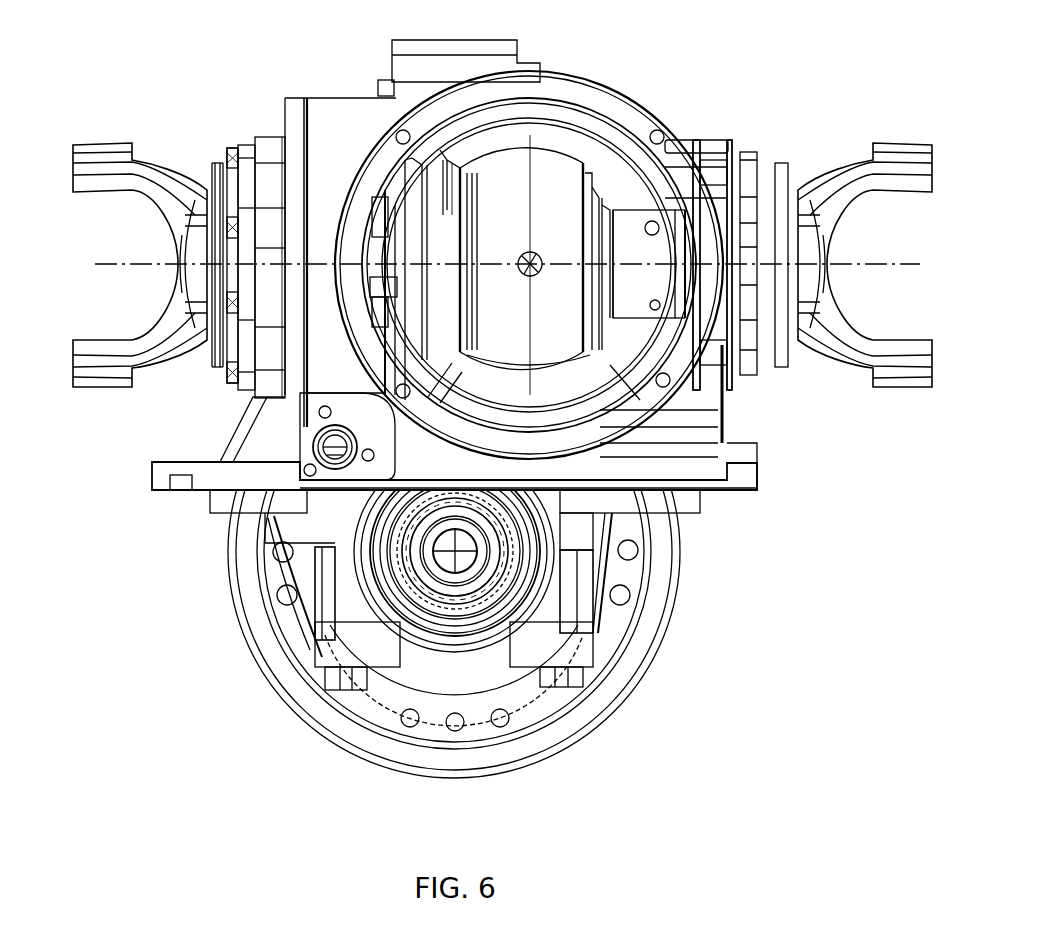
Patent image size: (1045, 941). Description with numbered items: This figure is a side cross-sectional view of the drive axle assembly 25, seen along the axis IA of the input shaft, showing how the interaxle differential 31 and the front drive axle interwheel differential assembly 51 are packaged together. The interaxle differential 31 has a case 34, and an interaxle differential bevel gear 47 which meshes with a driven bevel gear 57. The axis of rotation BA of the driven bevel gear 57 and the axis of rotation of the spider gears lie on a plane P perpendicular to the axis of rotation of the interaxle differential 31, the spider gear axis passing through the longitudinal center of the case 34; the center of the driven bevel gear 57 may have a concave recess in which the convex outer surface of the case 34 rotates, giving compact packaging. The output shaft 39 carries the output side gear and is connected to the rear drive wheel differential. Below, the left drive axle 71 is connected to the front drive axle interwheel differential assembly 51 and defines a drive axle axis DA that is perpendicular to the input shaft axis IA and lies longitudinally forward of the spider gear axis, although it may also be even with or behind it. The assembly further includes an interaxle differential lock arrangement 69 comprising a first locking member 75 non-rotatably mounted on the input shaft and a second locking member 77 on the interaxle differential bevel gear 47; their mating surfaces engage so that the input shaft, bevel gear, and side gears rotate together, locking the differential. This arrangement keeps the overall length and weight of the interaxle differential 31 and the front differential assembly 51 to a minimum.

The drive axle assembly 25 is at (243, 108).
The first locking member 75 is at (389, 258).
The second locking member 77 is at (407, 303).
The interaxle differential lock arrangement 69 is at (382, 207).
The interaxle differential bevel gear 47 is at (443, 207).
The plane P is at (528, 200).
The axis of rotation of the driven bevel gear BA is at (542, 253).
The driven bevel gear 57 is at (555, 140).
The case of the interaxle differential 34 is at (552, 197).
The output shaft 39 is at (657, 247).
The axis of the input shaft IA is at (150, 264).
The interaxle differential 31 is at (563, 307).
The drive axle axis DA is at (459, 554).
The left drive axle 71 is at (442, 561).
The front drive axle interwheel differential assembly 51 is at (617, 647).